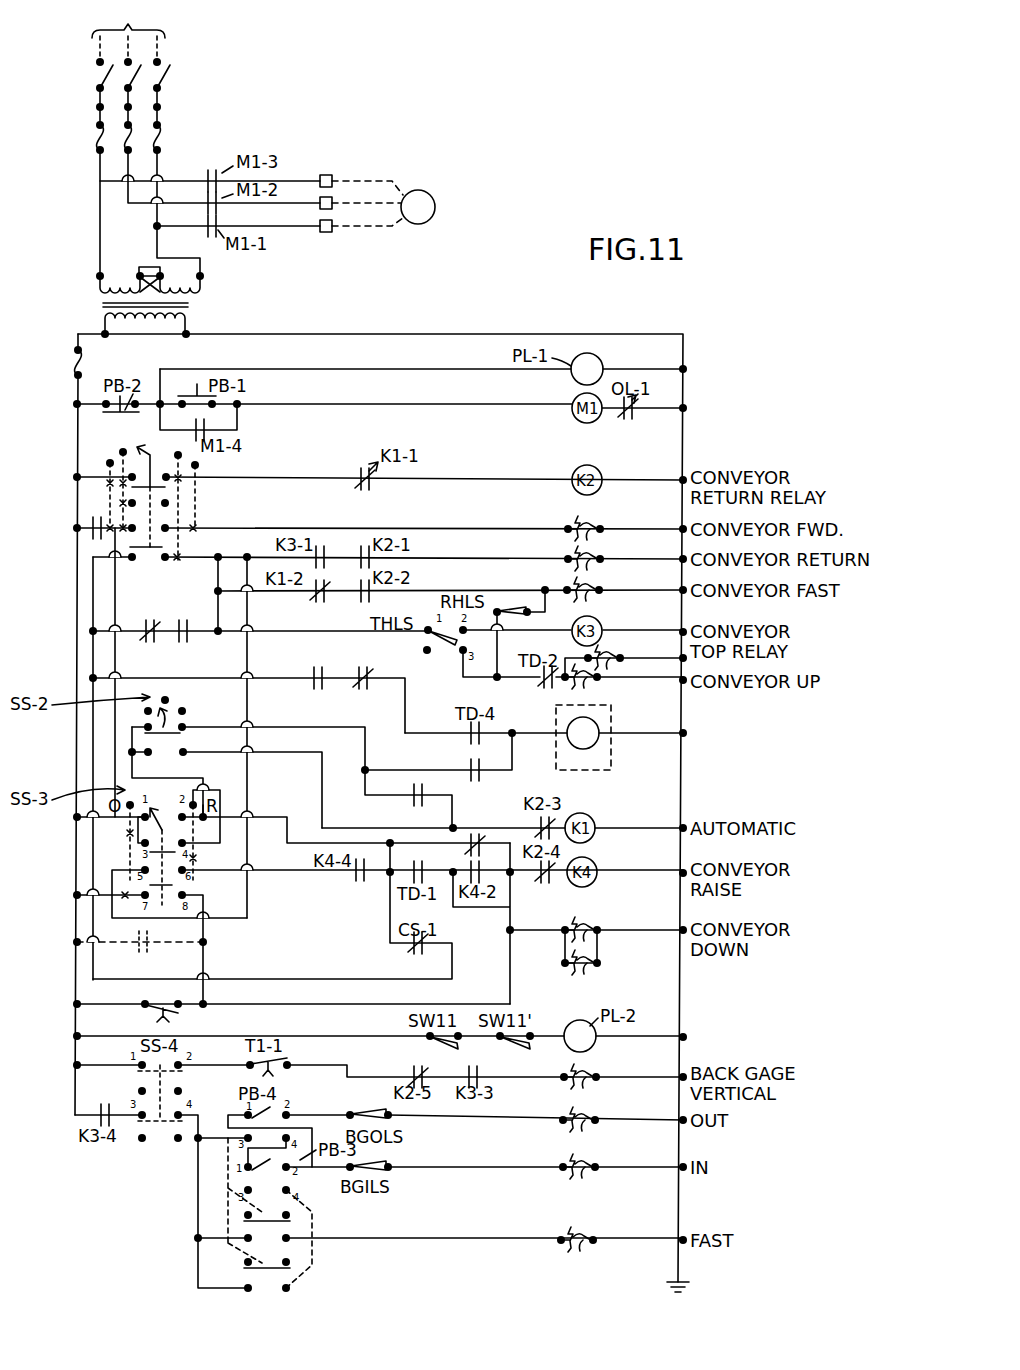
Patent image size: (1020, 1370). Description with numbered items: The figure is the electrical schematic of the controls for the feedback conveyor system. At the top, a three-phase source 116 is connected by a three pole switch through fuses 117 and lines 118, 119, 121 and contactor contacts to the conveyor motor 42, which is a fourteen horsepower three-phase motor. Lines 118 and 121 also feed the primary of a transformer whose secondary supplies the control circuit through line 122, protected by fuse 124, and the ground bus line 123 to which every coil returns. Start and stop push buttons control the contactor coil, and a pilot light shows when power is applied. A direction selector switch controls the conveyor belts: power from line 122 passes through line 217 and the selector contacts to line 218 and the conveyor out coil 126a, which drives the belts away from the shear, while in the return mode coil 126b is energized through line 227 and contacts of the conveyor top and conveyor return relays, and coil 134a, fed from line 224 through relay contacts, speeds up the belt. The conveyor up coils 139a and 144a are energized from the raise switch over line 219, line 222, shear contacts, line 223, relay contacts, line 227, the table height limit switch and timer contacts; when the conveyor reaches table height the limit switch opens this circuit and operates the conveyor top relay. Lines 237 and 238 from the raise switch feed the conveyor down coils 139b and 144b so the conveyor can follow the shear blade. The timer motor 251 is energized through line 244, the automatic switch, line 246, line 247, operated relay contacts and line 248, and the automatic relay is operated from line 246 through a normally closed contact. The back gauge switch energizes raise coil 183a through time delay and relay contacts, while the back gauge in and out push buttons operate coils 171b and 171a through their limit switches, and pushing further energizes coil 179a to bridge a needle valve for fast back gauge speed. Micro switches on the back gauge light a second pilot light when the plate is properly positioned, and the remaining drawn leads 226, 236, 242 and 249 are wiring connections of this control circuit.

The source 116 is at (174, 50).
The fuses 117 is at (178, 136).
The line 118 is at (97, 213).
The line 119 is at (135, 212).
The line 121 is at (157, 170).
The motor 42 is at (434, 200).
The line 122 is at (77, 403).
The ground bus line 123 is at (376, 334).
The fuse 124 is at (102, 363).
The line 217 is at (77, 482).
The line 218 is at (262, 529).
The line 224 is at (230, 575).
The conveyor top relay line 226 is at (220, 612).
The line 227 is at (307, 632).
The timer line 236 is at (93, 686).
The line 244 is at (132, 770).
The line 246 is at (322, 792).
The line 247 is at (452, 810).
The line 248 is at (380, 770).
The connection line 249 is at (498, 770).
The timer motor 251 is at (596, 722).
The line 219 is at (294, 848).
The line 222 is at (386, 926).
The line 223 is at (305, 979).
The line 237 is at (205, 955).
The line 238 is at (308, 1004).
The conveyor down line 242 is at (512, 925).
The coil 126a is at (597, 524).
The coil 126b is at (597, 555).
The coil 134a is at (597, 586).
The coil 139a is at (596, 684).
The coil 139b is at (595, 926).
The coil 144a is at (610, 652).
The coil 144b is at (596, 967).
The coil 171a is at (591, 1136).
The coil 171b is at (591, 1182).
The coil 179a is at (587, 1256).
The coil 183a is at (593, 1090).